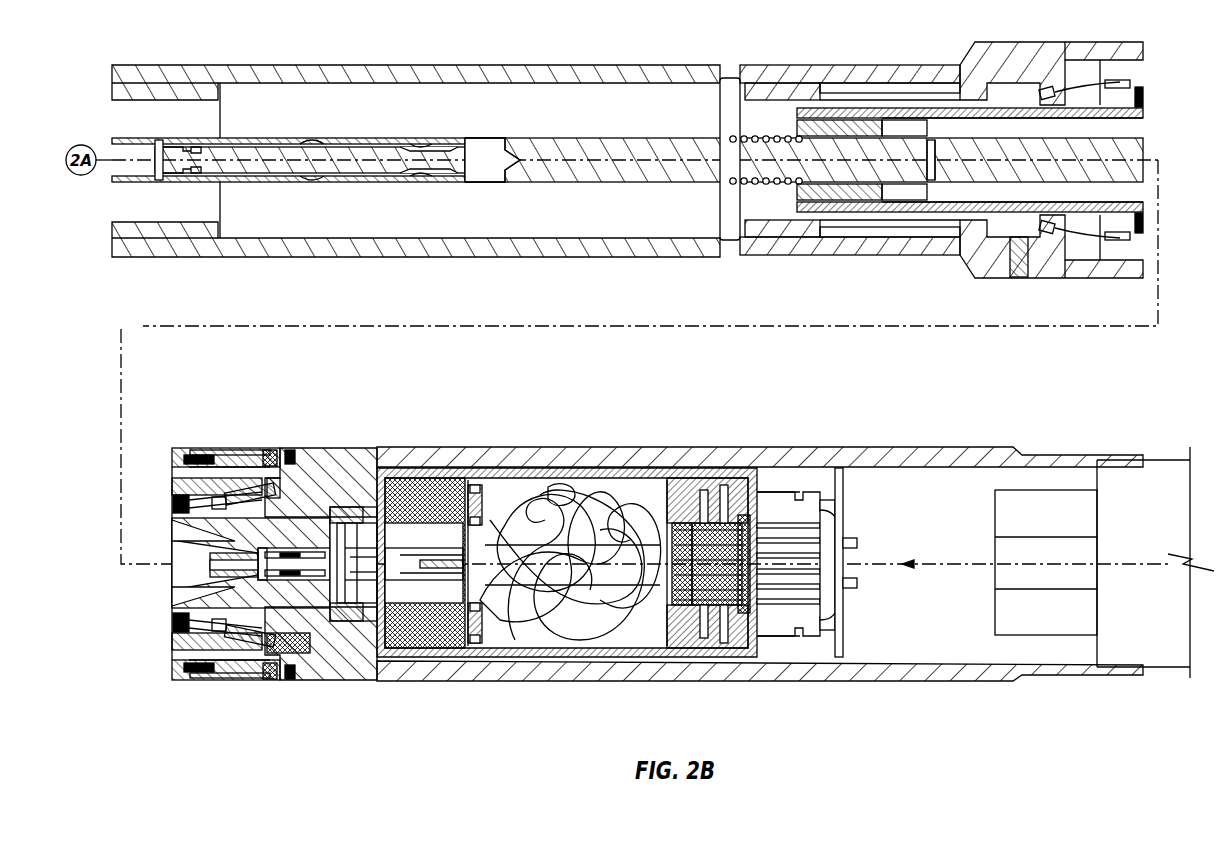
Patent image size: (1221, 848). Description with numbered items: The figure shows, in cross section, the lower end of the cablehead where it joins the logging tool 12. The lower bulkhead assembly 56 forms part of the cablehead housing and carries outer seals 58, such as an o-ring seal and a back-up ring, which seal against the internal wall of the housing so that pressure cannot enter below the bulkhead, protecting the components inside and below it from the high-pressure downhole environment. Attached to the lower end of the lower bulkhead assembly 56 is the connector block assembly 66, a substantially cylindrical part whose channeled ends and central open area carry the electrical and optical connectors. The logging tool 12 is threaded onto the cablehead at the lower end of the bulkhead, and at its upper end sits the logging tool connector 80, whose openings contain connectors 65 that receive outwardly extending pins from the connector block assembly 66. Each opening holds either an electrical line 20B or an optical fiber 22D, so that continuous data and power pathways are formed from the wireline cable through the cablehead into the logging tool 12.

The logging tool 12 is at (1161, 460).
The lower bulkhead assembly 56 is at (334, 447).
The outer seals 58 is at (282, 470).
The connector block assembly 66 is at (571, 460).
The logging tool connector 80 is at (1022, 490).
The optical fiber 22D is at (891, 542).
The electrical line 20B is at (890, 596).
The connectors 65 is at (1005, 618).